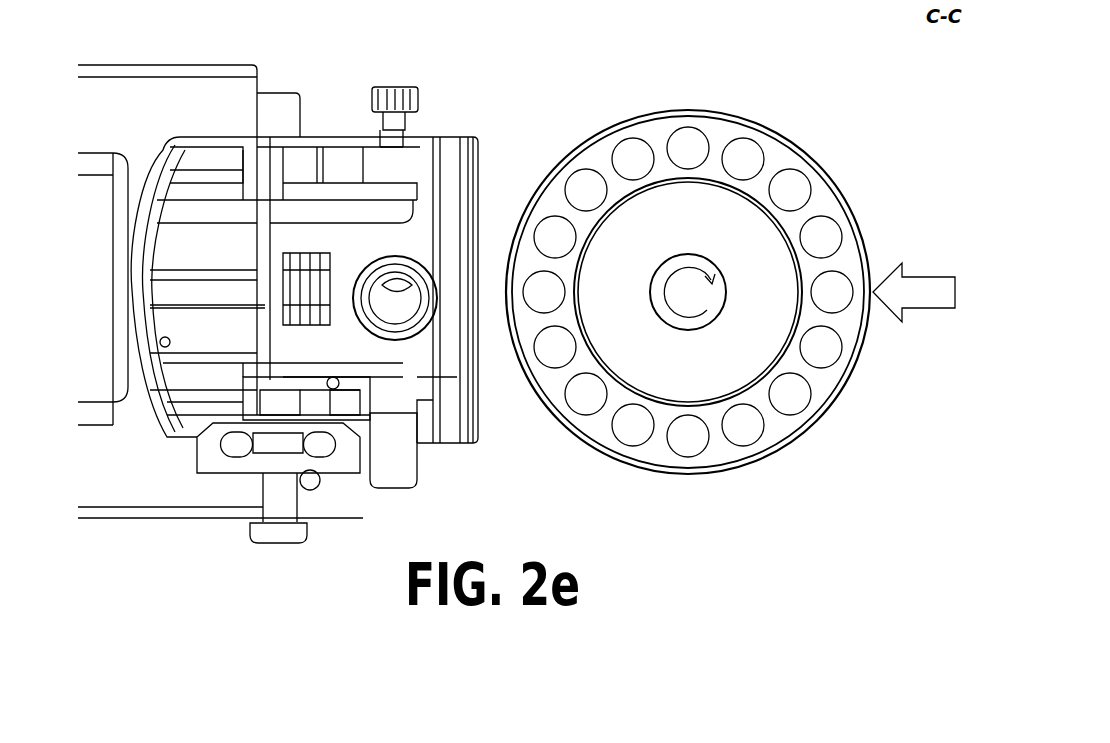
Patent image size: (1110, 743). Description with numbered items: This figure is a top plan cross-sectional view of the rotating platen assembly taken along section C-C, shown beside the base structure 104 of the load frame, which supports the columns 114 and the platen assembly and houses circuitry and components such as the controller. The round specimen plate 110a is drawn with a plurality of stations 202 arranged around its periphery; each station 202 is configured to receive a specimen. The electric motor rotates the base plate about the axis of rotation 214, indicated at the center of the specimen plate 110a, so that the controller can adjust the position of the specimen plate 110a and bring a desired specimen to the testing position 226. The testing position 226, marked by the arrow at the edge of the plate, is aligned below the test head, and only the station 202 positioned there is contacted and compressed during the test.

The base structure 104 is at (710, 55).
The specimen plate 110a is at (788, 136).
The column 114 is at (332, 125).
The station 202 is at (610, 125).
The axis of rotation 214 is at (688, 292).
The testing position 226 is at (914, 292).